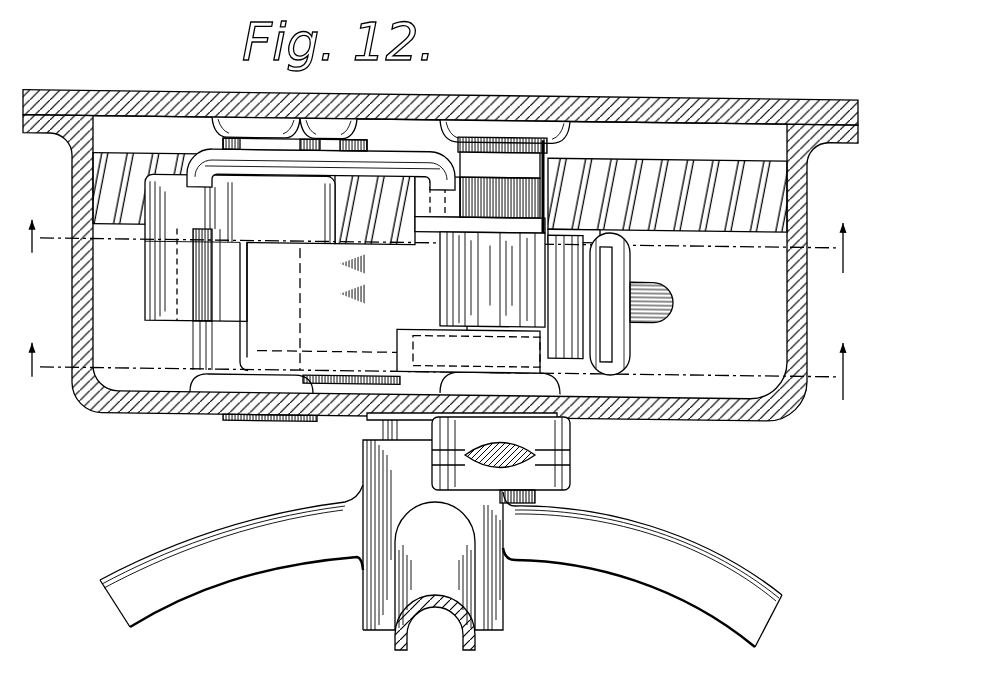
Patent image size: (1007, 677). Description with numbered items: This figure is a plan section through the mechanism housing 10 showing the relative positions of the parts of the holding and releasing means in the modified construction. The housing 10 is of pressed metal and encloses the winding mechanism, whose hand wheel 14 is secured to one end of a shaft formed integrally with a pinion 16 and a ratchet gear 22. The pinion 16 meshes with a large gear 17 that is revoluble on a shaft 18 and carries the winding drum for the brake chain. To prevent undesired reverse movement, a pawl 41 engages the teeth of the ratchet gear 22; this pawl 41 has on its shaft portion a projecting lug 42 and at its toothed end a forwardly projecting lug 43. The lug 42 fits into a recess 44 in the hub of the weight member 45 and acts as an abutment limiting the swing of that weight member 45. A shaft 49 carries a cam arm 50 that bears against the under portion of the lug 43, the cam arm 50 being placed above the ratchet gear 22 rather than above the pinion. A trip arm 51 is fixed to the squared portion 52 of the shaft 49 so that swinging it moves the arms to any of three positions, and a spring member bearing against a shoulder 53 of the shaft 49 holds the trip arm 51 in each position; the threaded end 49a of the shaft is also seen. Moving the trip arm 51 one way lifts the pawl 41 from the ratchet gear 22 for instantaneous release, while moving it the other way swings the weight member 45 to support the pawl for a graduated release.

The housing 10 is at (125, 410).
The hand wheel 14 is at (183, 538).
The pinion 16 is at (432, 90).
The large gear 17 is at (698, 173).
The shaft 18 is at (438, 366).
The ratchet gear 22 is at (634, 378).
The pawl 41 is at (375, 314).
The projecting lug 42 is at (318, 242).
The forwardly projecting lug 43 is at (544, 368).
The recess 44 is at (356, 138).
The weight member 45 is at (142, 323).
The shaft 49 is at (518, 277).
The threaded stub 49a is at (518, 501).
The cam arm 50 is at (476, 183).
The trip arm 51 is at (528, 469).
The squared portion 52 is at (481, 147).
The shoulder 53 is at (521, 143).